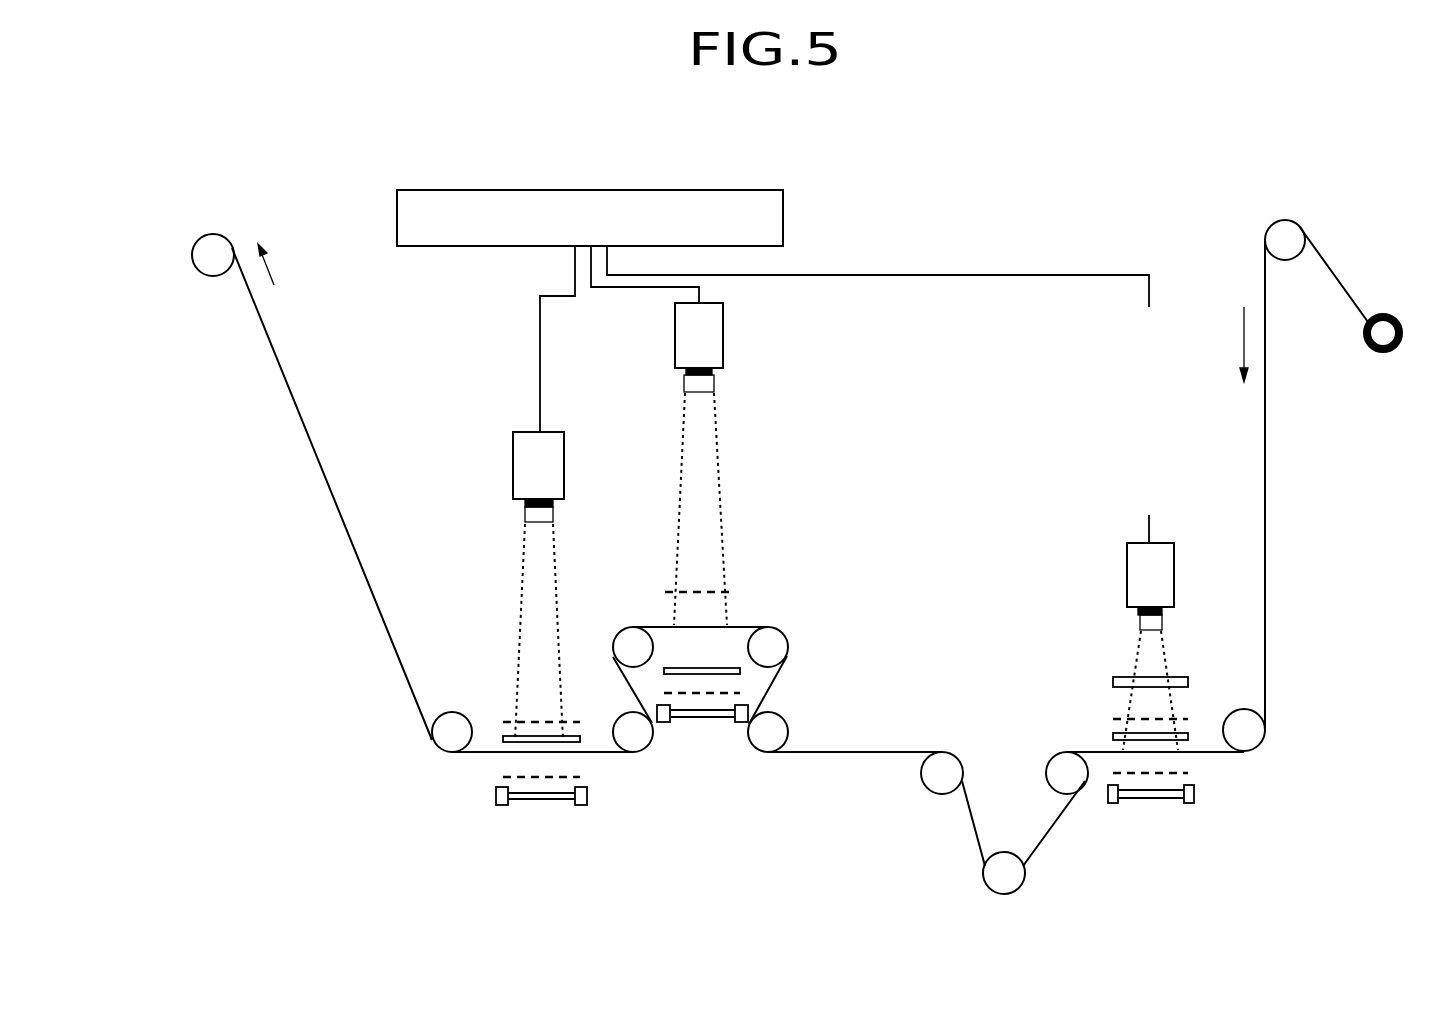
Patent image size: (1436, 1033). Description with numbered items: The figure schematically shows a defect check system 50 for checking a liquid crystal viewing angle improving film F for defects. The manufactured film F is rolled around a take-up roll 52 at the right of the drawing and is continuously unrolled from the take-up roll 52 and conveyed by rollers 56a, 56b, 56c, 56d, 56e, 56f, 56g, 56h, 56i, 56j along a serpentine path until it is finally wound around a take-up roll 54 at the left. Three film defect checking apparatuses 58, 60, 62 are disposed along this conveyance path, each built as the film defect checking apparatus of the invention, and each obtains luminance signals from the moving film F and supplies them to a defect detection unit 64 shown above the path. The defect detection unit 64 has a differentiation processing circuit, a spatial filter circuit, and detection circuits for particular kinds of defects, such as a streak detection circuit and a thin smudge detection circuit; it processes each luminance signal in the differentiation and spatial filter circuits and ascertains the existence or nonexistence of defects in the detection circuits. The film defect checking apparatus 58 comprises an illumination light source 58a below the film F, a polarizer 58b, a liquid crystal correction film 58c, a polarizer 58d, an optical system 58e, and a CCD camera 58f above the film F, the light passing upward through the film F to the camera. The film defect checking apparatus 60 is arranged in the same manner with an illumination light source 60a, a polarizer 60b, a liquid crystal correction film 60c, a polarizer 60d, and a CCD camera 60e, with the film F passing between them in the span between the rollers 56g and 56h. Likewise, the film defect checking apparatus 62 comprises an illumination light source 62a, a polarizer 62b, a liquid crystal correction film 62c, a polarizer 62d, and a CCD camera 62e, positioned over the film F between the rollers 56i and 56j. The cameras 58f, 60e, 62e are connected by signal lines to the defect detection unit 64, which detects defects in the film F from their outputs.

The defect check system 50 is at (838, 215).
The take-up roll 52 is at (1383, 316).
The take-up roll 54 is at (215, 250).
The roller 56a is at (1278, 232).
The roller 56b is at (1258, 732).
The roller 56c is at (1068, 780).
The roller 56d is at (997, 886).
The roller 56e is at (934, 782).
The roller 56f is at (771, 739).
The roller 56g is at (782, 646).
The roller 56h is at (625, 642).
The roller 56i is at (637, 739).
The roller 56j is at (447, 737).
The film defect checking apparatus 58 is at (1175, 686).
The illumination light source 58a is at (1160, 804).
The polarizer 58b is at (1195, 773).
The liquid crystal correction film 58c is at (1115, 721).
The polarizer 58d is at (1119, 735).
The optical system 58e is at (1190, 684).
The CCD camera 58f is at (1170, 567).
The film defect checking apparatus 60 is at (763, 538).
The illumination light source 60a is at (708, 722).
The polarizer 60b is at (742, 693).
The liquid crystal correction film 60c is at (740, 671).
The polarizer 60d is at (740, 593).
The CCD camera 60e is at (722, 335).
The film defect checking apparatus 62 is at (531, 643).
The illumination light source 62a is at (552, 801).
The polarizer 62b is at (505, 780).
The liquid crystal correction film 62c is at (507, 721).
The polarizer 62d is at (509, 738).
The CCD camera 62e is at (562, 464).
The defect detection unit 64 is at (578, 190).
The film F is at (1266, 428).